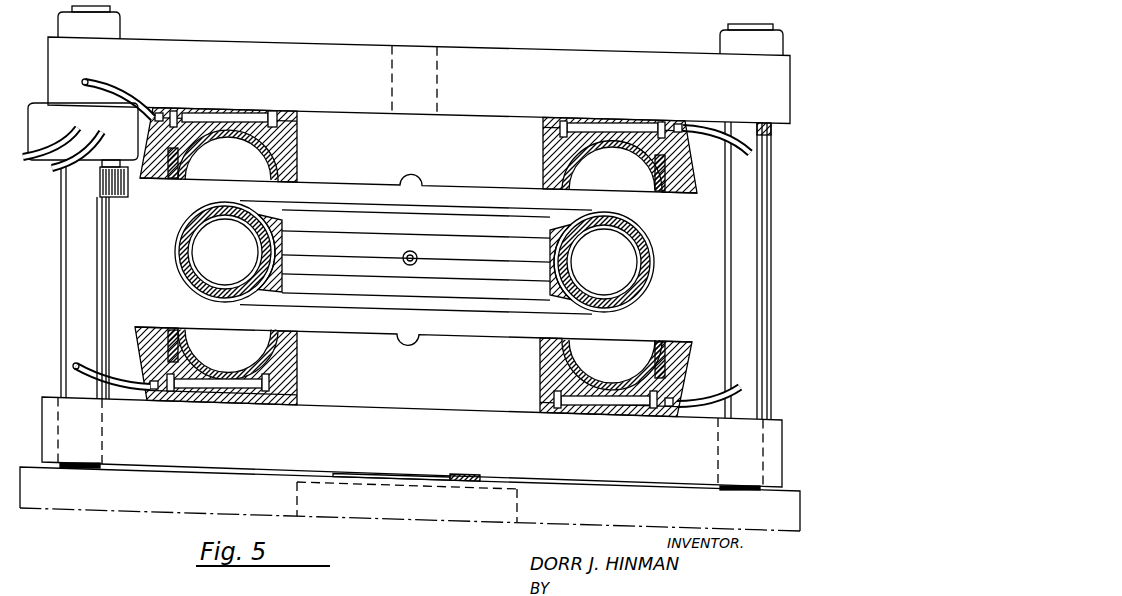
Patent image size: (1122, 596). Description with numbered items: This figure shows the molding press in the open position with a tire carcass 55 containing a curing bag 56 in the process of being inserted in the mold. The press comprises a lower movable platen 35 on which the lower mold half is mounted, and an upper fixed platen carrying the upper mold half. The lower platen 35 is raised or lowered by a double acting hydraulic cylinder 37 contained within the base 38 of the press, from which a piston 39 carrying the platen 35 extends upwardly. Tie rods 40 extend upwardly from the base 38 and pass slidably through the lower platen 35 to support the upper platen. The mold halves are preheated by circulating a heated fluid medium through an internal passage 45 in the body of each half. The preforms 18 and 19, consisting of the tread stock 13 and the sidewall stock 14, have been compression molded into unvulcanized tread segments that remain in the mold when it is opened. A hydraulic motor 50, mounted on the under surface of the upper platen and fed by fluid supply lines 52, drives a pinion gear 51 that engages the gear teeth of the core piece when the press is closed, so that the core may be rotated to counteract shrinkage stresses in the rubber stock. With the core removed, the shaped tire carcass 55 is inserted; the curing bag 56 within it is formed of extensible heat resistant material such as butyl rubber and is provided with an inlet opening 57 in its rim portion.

The tread stock 13 is at (660, 340).
The sidewall stock 14 is at (631, 409).
The preform 18 is at (607, 137).
The preform 19 is at (560, 413).
The lower movable platen 35 is at (368, 398).
The double acting hydraulic cylinder 37 is at (518, 505).
The base 38 is at (410, 499).
The piston 39 is at (478, 469).
The tie rods 40 is at (66, 316).
The internal passage 45 is at (251, 118).
The motor 50 is at (57, 107).
The pinion gear 51 is at (98, 200).
The fluid supply lines 52 is at (50, 172).
The tire carcass 55 is at (273, 222).
The curing bag 56 is at (284, 241).
The inlet opening 57 is at (413, 251).